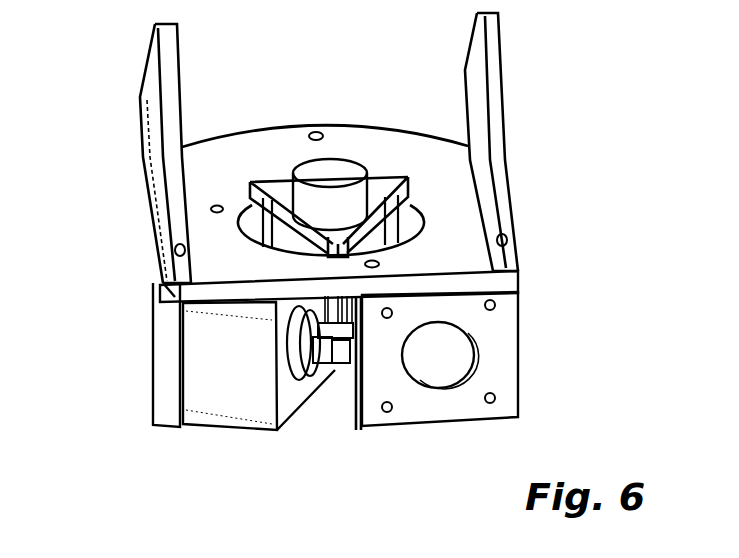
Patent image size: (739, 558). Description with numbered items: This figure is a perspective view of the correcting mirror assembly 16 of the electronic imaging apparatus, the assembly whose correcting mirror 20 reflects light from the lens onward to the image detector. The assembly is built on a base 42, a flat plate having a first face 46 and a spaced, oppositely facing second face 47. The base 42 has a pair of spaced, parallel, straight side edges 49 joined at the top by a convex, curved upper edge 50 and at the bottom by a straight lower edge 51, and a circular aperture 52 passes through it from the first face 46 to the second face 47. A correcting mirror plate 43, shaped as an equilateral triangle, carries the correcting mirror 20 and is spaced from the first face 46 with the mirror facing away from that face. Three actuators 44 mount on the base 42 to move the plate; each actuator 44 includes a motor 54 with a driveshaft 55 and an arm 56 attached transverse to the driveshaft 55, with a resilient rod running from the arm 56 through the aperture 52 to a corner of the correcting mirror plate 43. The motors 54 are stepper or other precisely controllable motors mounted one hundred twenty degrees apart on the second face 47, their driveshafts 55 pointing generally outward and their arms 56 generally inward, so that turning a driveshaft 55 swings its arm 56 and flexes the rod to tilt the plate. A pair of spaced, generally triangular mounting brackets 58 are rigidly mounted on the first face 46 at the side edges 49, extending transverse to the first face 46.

The correcting mirror assembly 16 is at (113, 46).
The correcting mirror 20 is at (368, 160).
The base 42 is at (482, 285).
The correcting mirror plate 43 is at (263, 173).
The actuators 44 is at (500, 343).
The first face 46 is at (213, 153).
The second face 47 is at (148, 206).
The side edges 49 is at (152, 248).
The upper edge 50 is at (347, 123).
The lower edge 51 is at (197, 303).
The circular aperture 52 is at (413, 205).
The motor 54 is at (205, 357).
The driveshaft 55 is at (350, 363).
The arm 56 is at (340, 373).
The mounting brackets 58 is at (505, 148).